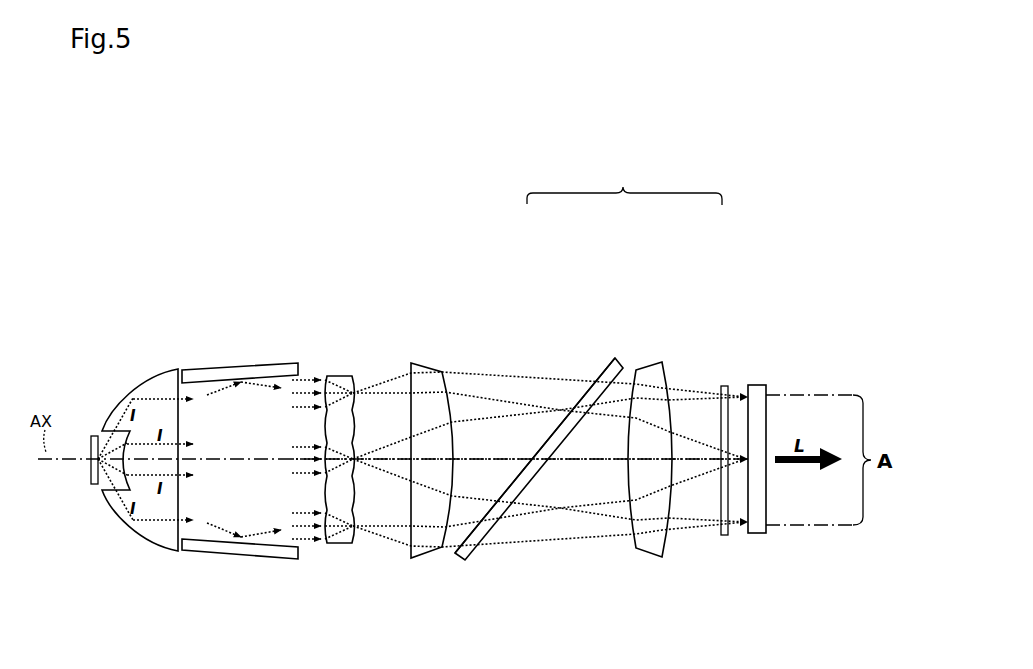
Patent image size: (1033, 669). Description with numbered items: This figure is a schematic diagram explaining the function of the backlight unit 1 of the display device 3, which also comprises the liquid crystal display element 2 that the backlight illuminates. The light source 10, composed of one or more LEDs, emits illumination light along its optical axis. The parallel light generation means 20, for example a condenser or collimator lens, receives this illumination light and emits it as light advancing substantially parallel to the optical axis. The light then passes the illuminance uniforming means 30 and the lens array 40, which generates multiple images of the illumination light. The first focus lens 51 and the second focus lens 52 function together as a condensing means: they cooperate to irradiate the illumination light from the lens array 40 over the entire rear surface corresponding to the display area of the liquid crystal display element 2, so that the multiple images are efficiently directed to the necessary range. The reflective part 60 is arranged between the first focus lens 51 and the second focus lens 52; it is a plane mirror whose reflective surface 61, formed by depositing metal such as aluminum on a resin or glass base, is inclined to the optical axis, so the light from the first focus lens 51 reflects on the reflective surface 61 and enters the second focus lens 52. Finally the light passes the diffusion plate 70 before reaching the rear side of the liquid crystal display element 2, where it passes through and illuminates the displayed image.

The backlight unit 1 is at (461, 322).
The liquid crystal display element 2 is at (755, 382).
The display device 3 is at (624, 184).
The light source 10 is at (95, 486).
The parallel light generation means 20 is at (150, 539).
The illuminance uniforming means 30 is at (232, 548).
The lens array 40 is at (338, 544).
The first focus lens 51 is at (427, 558).
The second focus lens 52 is at (647, 548).
The reflective part 60 is at (622, 366).
The reflective surface 61 is at (598, 372).
The diffusion plate 70 is at (721, 386).